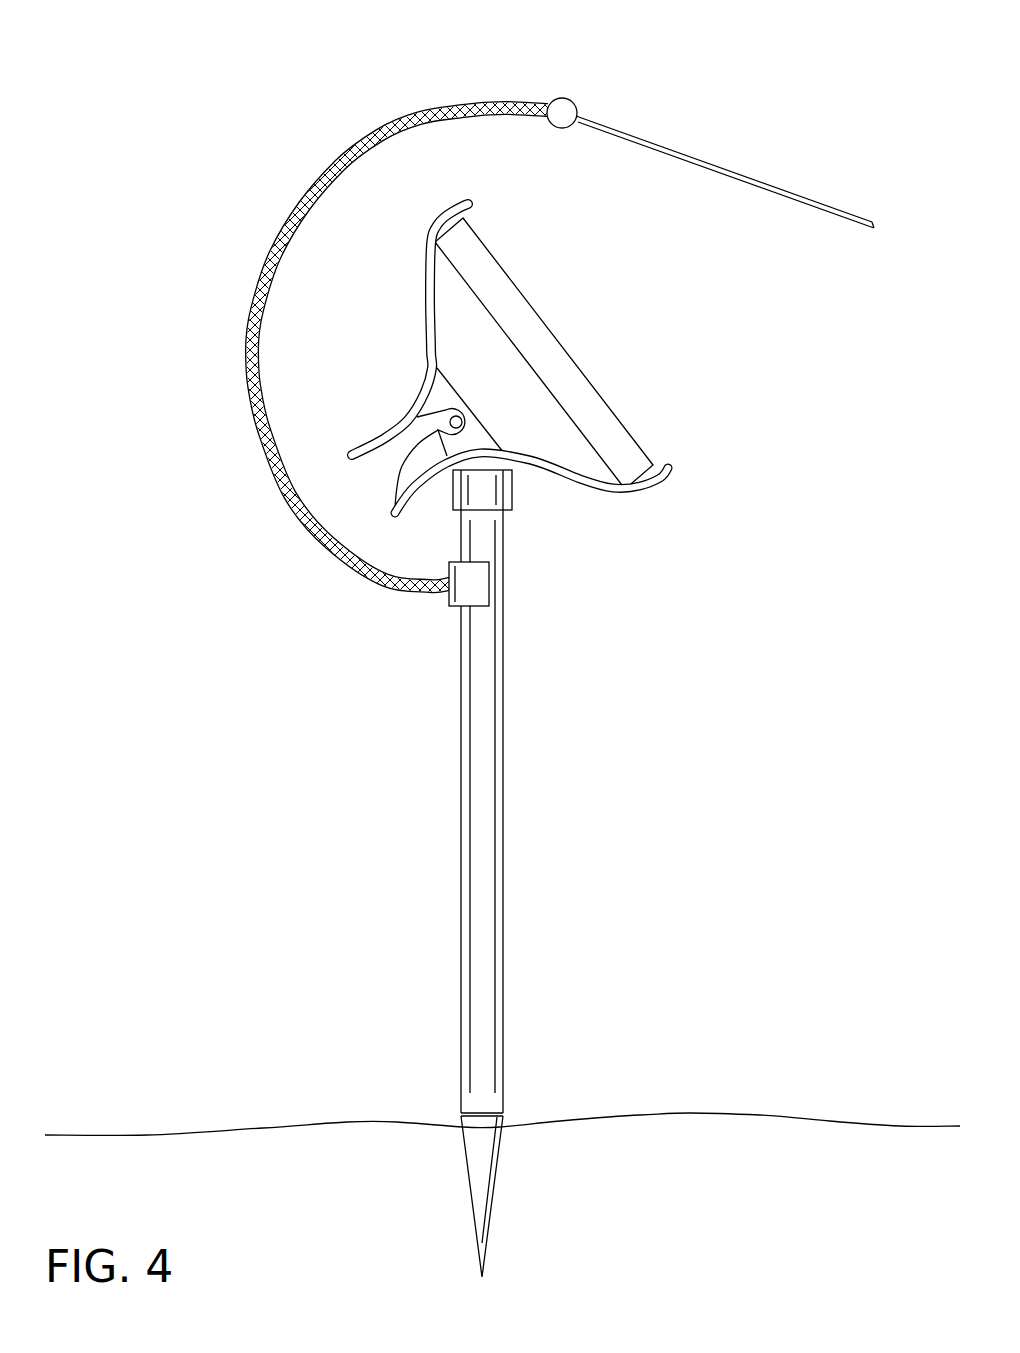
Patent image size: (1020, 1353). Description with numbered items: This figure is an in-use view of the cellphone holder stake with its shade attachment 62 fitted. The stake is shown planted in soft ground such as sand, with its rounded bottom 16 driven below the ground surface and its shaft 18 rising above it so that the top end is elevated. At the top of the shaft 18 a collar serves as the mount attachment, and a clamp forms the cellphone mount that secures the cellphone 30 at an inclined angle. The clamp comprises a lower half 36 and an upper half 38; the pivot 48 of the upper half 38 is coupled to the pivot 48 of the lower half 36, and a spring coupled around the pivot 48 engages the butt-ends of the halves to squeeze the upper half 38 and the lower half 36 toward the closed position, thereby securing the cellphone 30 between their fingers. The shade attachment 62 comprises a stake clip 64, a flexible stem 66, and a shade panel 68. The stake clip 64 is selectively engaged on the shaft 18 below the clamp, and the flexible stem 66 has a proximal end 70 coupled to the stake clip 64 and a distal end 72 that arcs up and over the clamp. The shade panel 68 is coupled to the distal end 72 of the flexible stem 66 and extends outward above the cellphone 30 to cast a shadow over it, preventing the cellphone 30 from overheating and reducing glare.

The rounded bottom 16 is at (487, 1172).
The shaft 18 is at (498, 923).
The cellphone 30 is at (543, 343).
The lower half 36 is at (568, 484).
The upper half 38 is at (428, 327).
The pivot 48 is at (451, 426).
The shade attachment 62 is at (497, 102).
The stake clip 64 is at (475, 587).
The flexible stem 66 is at (247, 372).
The shade panel 68 is at (713, 167).
The proximal end 70 is at (445, 584).
The distal end 72 is at (543, 104).